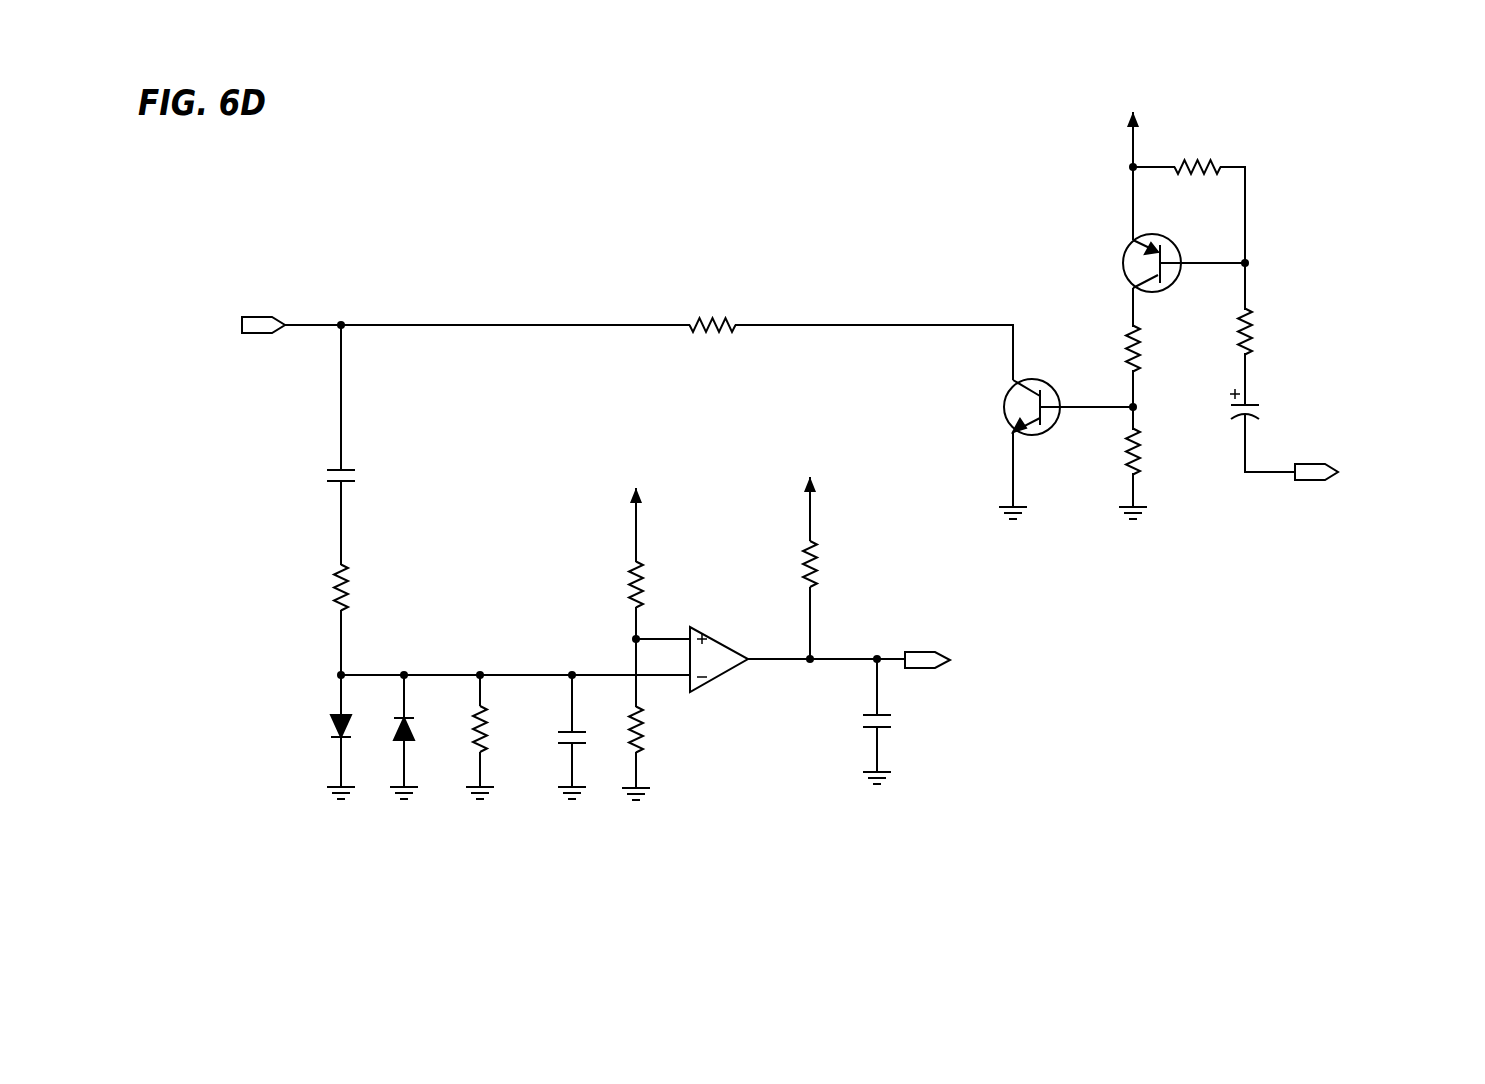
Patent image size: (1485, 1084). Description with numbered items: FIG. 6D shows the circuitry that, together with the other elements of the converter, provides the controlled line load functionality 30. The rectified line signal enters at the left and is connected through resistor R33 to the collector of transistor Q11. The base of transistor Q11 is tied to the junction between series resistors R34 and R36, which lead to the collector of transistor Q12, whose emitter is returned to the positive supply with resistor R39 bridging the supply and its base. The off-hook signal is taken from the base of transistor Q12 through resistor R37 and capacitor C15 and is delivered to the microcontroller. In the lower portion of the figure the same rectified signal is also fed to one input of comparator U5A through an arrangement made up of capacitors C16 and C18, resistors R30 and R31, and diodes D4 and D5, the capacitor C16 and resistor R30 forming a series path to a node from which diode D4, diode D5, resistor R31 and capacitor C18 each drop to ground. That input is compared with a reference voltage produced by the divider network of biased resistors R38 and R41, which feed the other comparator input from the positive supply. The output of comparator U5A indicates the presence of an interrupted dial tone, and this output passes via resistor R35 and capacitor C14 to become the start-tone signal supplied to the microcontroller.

The controlled line load functionality 30 is at (470, 215).
The resistor R33 is at (713, 307).
The capacitor C16 is at (359, 456).
The resistor R30 is at (365, 588).
The diode D4 is at (324, 725).
The diode D5 is at (422, 725).
The resistor R31 is at (506, 729).
The capacitor C18 is at (554, 755).
The biased resistor R38 is at (611, 585).
The biased resistor R41 is at (662, 730).
The comparator U5A is at (717, 642).
The resistor R35 is at (786, 564).
The capacitor C14 is at (853, 723).
The transistor Q11 is at (1014, 410).
The series resistor R34 is at (1160, 349).
The series resistor R36 is at (1160, 452).
The transistor Q12 is at (1133, 264).
The resistor R39 is at (1196, 149).
The resistor R37 is at (1272, 332).
The capacitor C15 is at (1271, 408).